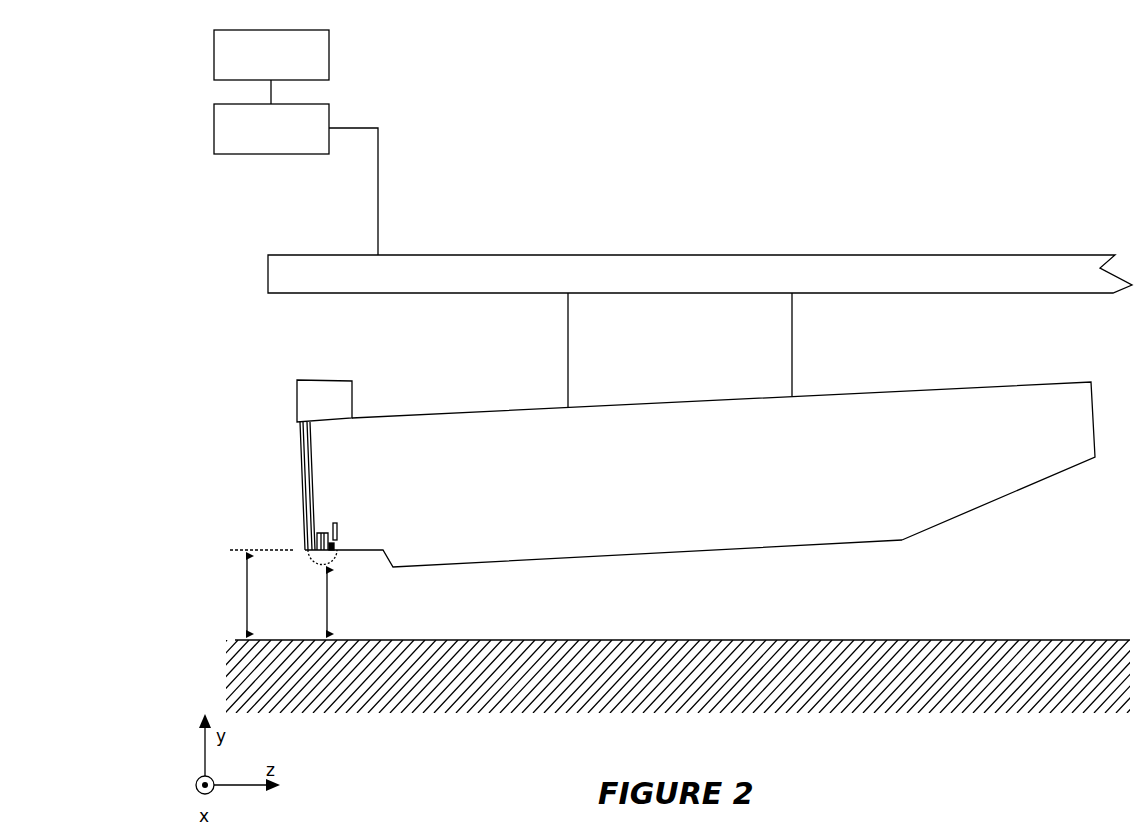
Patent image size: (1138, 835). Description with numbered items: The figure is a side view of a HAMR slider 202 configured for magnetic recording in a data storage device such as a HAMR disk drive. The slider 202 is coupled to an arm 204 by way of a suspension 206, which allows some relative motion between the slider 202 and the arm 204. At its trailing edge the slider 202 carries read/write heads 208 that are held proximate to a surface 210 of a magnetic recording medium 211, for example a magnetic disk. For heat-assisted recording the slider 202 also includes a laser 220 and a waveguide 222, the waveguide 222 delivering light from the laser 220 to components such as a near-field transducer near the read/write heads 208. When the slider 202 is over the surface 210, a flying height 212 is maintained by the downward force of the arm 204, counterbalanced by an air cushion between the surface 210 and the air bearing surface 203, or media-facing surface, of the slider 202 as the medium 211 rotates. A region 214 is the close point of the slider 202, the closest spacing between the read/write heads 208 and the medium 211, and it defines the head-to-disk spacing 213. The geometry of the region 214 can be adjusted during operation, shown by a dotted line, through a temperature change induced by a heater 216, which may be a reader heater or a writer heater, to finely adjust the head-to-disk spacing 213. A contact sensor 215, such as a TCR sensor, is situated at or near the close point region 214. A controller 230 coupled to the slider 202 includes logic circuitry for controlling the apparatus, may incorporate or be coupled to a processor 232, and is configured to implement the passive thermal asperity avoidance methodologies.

The HAMR slider 202 is at (960, 395).
The air bearing surface 203 is at (517, 560).
The arm 204 is at (1025, 268).
The suspension 206 is at (792, 340).
The read/write heads 208 is at (317, 540).
The surface 210 is at (962, 640).
The magnetic recording medium 211 is at (980, 693).
The flying height 212 is at (249, 592).
The head-to-disk spacing 213 is at (308, 602).
The region 214 is at (337, 560).
The contact sensor 215 is at (334, 546).
The heater 216 is at (333, 530).
The laser 220 is at (322, 393).
The waveguide 222 is at (304, 455).
The controller 230 is at (214, 127).
The processor 232 is at (214, 52).